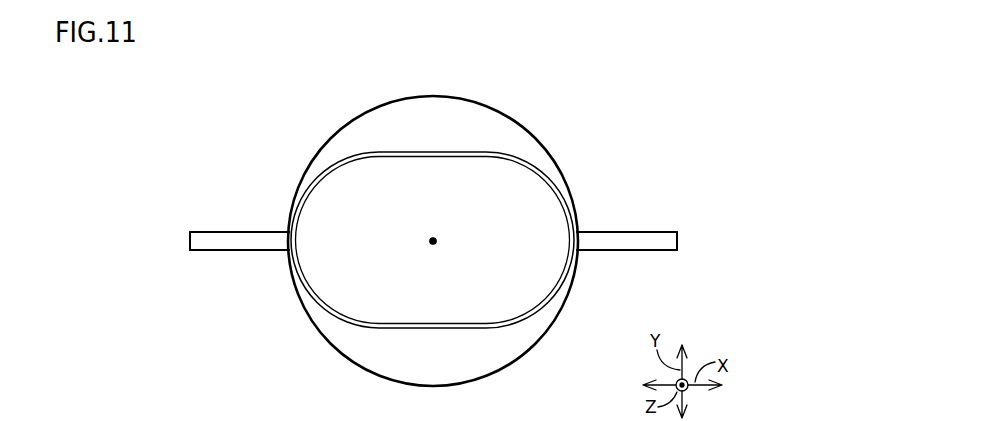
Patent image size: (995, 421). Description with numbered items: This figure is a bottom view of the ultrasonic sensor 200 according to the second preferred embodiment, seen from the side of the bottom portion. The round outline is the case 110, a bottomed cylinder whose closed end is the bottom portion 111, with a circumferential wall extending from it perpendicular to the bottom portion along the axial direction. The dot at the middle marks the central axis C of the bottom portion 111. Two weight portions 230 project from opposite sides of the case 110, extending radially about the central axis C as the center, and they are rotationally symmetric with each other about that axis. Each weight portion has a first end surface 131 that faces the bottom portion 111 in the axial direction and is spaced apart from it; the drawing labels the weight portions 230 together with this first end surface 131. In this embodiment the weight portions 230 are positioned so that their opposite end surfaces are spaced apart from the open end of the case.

The case 110 is at (432, 103).
The bottom portion 111 is at (505, 348).
The ultrasonic sensor 200 is at (645, 127).
The weight portions 230 is at (196, 241).
The first end surface 131 is at (431, 241).
The central axis C is at (433, 244).